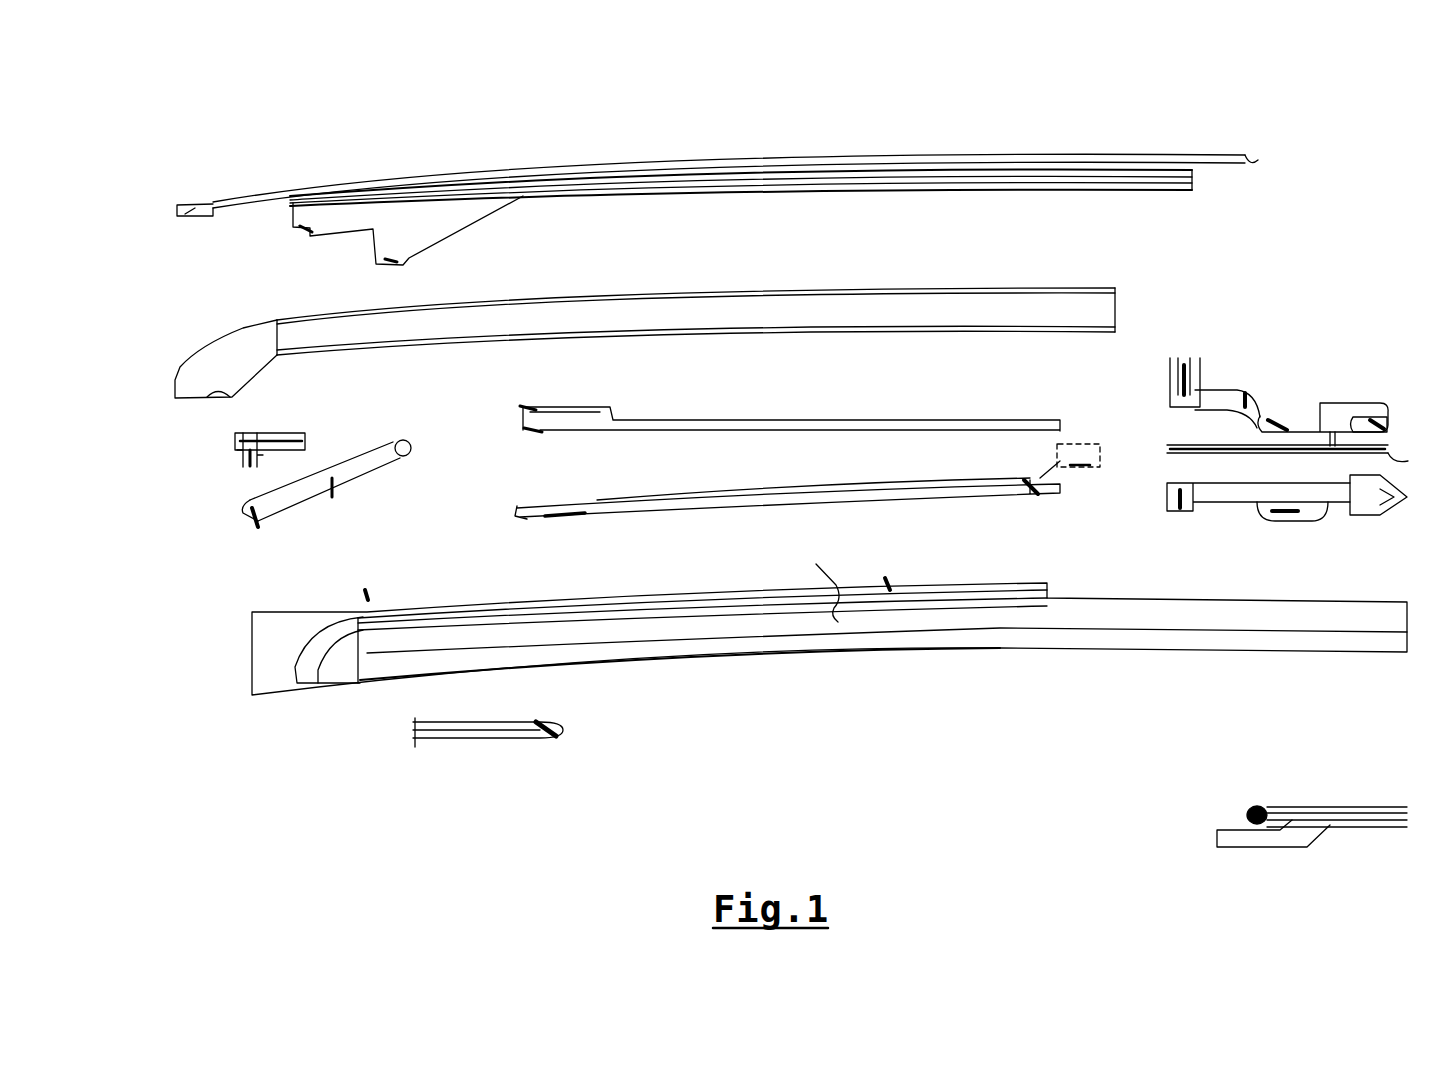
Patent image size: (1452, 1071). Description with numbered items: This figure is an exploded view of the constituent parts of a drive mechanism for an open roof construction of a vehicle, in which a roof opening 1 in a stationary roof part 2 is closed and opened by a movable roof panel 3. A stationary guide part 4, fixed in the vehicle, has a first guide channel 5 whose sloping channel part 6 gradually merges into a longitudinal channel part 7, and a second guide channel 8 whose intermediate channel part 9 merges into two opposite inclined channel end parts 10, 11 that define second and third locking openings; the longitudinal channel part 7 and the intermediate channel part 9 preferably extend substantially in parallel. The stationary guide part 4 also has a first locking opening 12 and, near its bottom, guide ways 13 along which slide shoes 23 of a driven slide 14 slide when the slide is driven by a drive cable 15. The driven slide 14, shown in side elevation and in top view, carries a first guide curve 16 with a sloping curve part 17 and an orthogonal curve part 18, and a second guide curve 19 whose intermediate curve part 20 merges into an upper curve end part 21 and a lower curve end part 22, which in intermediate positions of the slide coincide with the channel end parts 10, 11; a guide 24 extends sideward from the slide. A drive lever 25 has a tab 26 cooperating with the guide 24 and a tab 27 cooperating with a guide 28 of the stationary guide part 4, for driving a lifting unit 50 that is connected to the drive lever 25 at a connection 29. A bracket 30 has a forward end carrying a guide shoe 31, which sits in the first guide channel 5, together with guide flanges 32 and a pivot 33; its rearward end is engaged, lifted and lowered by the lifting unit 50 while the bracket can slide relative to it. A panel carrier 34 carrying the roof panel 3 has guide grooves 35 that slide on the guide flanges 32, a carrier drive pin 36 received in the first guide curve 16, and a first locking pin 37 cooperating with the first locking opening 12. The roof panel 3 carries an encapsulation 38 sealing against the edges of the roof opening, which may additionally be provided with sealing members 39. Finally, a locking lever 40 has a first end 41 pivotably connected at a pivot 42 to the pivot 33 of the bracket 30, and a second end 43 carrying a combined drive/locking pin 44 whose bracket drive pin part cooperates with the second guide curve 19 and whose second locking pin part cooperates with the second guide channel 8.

The roof opening 1 is at (303, 895).
The stationary roof part 2 is at (1294, 835).
The movable roof panel 3 is at (555, 173).
The stationary guide part 4 is at (272, 623).
The first guide channel 5 is at (888, 583).
The sloping channel part 6 is at (305, 668).
The longitudinal channel part 7 is at (716, 597).
The second guide channel 8 is at (649, 610).
The intermediate channel part 9 is at (450, 625).
The inclined channel end part 10 is at (368, 617).
The inclined channel end part 11 is at (817, 579).
The first locking opening 12 is at (302, 630).
The guide way 13 is at (930, 642).
The driven slide 14 is at (1332, 403).
The drive cable 15 is at (1408, 461).
The first guide curve 16 is at (1243, 400).
The sloping curve part 17 is at (1278, 417).
The orthogonal curve part 18 is at (1187, 363).
The second guide curve 19 is at (1180, 375).
The intermediate curve part 20 is at (1185, 385).
The upper curve end part 21 is at (1203, 382).
The lower curve end part 22 is at (1177, 397).
The slide shoes 23 is at (1283, 417).
The guide 24 is at (1297, 504).
The drive lever 25 is at (779, 423).
The tab 26 is at (523, 407).
The tab 27 is at (528, 428).
The guide 28 is at (547, 736).
The connection 29 is at (1033, 486).
The bracket 30 is at (500, 321).
The guide shoe 31 is at (220, 396).
The guide flange 32 is at (795, 290).
The pivot 33 is at (437, 322).
The panel carrier 34 is at (467, 200).
The guide grooves 35 is at (745, 182).
The carrier drive pin 36 is at (393, 259).
The first locking pin 37 is at (289, 226).
The encapsulation 38 is at (192, 212).
The sealing members 39 is at (1250, 815).
The locking lever 40 is at (267, 432).
The first end 41 is at (390, 460).
The pivot 42 is at (408, 457).
The second end 43 is at (252, 434).
The combined drive/locking pin 44 is at (240, 460).
The lifting unit 50 is at (1087, 467).